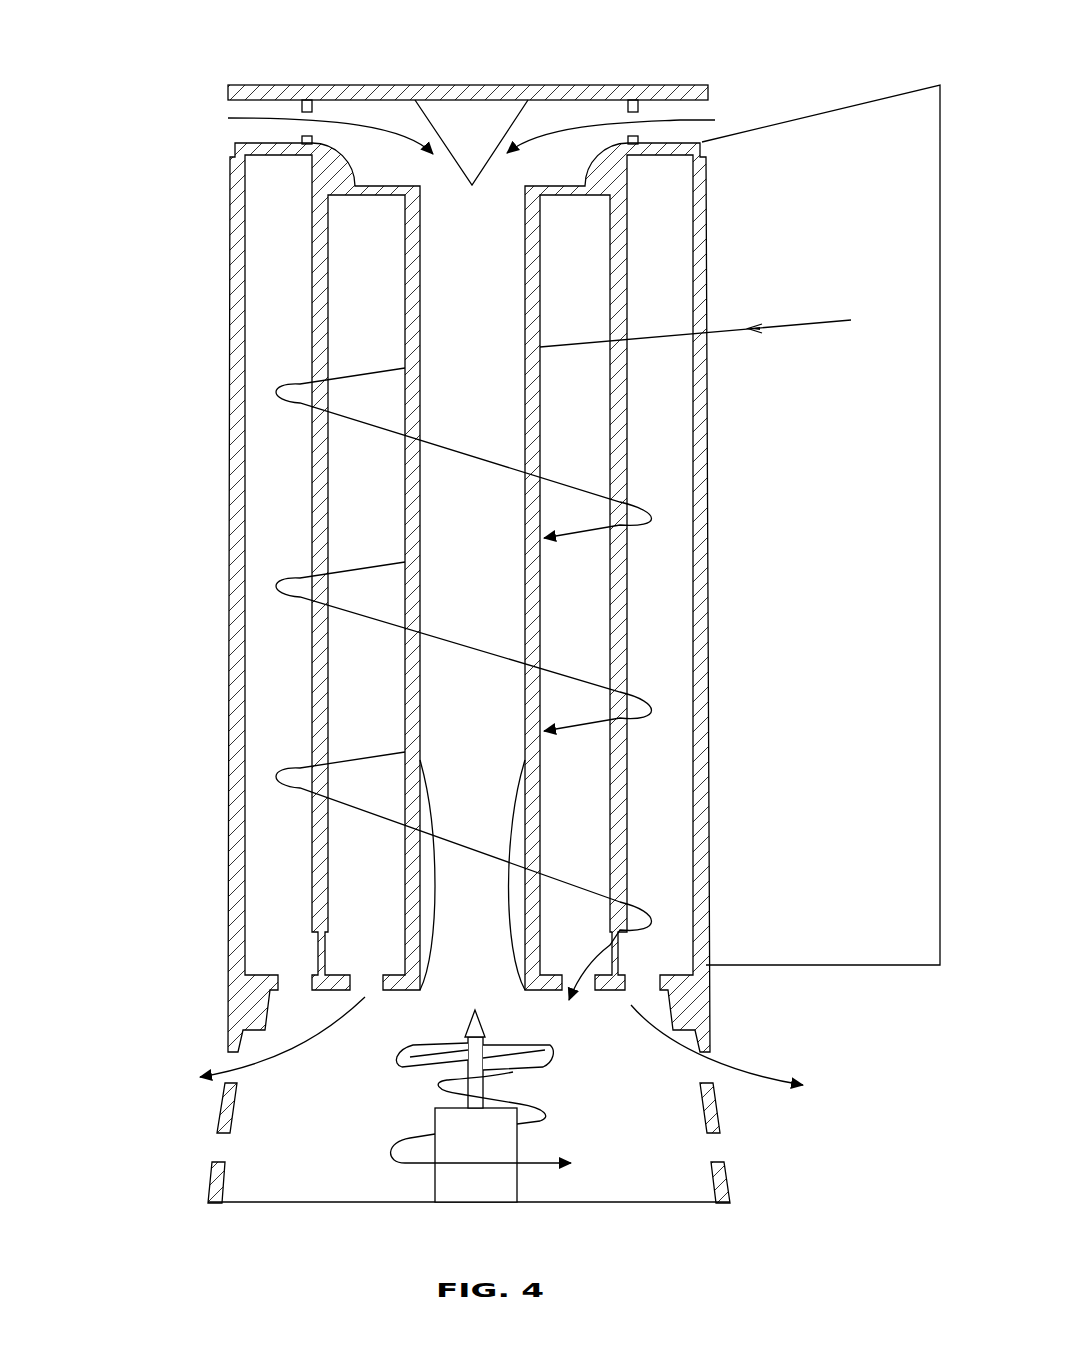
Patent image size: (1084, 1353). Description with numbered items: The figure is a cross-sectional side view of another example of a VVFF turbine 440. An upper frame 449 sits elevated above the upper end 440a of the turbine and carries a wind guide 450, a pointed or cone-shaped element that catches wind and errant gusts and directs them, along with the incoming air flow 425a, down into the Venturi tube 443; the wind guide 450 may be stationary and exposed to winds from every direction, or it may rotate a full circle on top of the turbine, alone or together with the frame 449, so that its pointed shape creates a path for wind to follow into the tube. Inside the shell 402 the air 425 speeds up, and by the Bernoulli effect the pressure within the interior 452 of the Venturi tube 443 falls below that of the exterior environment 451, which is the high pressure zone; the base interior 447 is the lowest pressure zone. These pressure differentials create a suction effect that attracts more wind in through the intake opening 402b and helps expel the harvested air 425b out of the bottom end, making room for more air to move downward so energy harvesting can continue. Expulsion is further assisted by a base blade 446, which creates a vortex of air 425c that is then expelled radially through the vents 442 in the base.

The VVFF turbine 440 is at (118, 228).
The upper end of the turbine 440a is at (216, 124).
The upper frame 449 is at (342, 85).
The air flow at inlet 425a is at (697, 118).
The wind guide 450 is at (502, 133).
The Venturi tube 443 is at (408, 358).
The interior of the Venturi tube 452 is at (460, 352).
The air flow 425 is at (805, 322).
The shell 402 is at (232, 432).
The intake opening 402b is at (726, 376).
The exterior environment 451 is at (135, 620).
The harvested air 425b is at (755, 1075).
The base blade 446 is at (437, 1120).
The vortex of air 425c is at (530, 1160).
The base interior 447 is at (297, 1175).
The vents 442 is at (726, 1145).